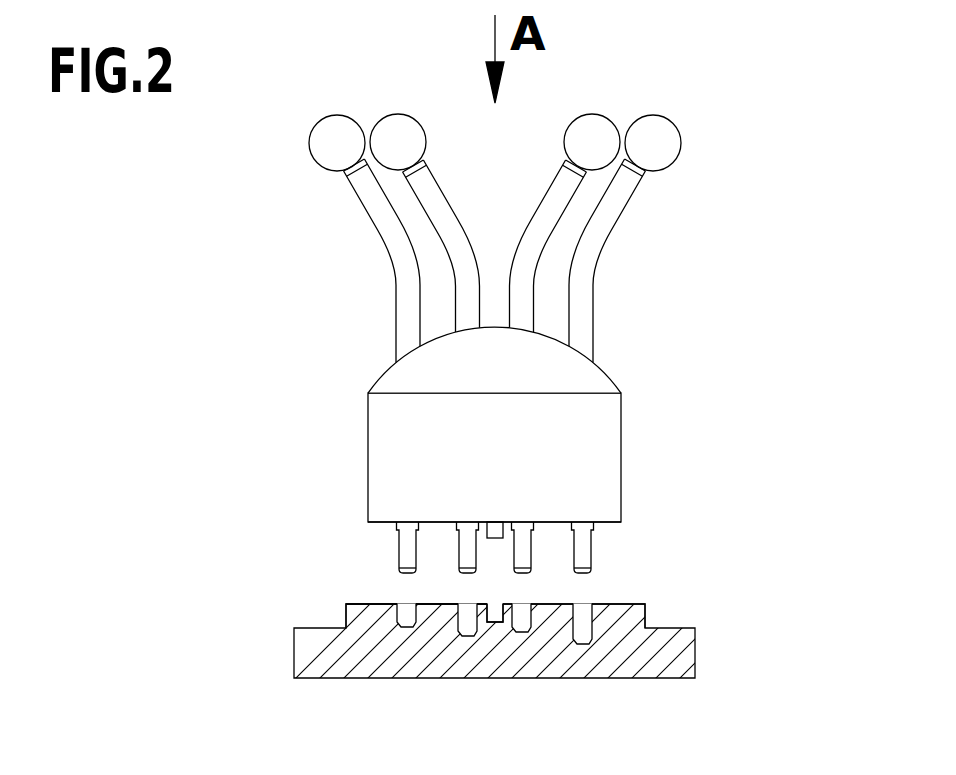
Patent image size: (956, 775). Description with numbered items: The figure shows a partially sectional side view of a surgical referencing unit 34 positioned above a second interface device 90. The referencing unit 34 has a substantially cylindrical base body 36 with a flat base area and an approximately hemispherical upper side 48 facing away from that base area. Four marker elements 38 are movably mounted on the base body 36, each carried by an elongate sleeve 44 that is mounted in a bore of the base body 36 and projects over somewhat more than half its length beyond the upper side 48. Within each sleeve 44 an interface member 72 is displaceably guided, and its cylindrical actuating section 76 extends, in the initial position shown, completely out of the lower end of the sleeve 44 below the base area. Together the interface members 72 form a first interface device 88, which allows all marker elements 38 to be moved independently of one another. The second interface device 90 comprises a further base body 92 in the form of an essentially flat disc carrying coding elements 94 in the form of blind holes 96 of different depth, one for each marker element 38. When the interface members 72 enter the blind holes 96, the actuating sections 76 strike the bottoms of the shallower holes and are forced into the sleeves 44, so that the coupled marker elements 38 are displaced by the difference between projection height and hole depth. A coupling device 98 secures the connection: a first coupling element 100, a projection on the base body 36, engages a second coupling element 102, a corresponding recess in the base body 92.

The referencing unit 34 is at (746, 370).
The base body 36 is at (595, 440).
The marker element 38 is at (588, 134).
The sleeve 44 is at (582, 280).
The upper side 48 is at (588, 382).
The interface member 72 is at (361, 533).
The actuating section 76 is at (613, 558).
The first interface device 88 is at (318, 561).
The second interface device 90 is at (259, 623).
The base body 92 is at (677, 658).
The coding element 94 is at (610, 592).
The blind hole 96 is at (404, 618).
The coupling device 98 is at (449, 589).
The first coupling element 100 is at (493, 531).
The second coupling element 102 is at (497, 625).